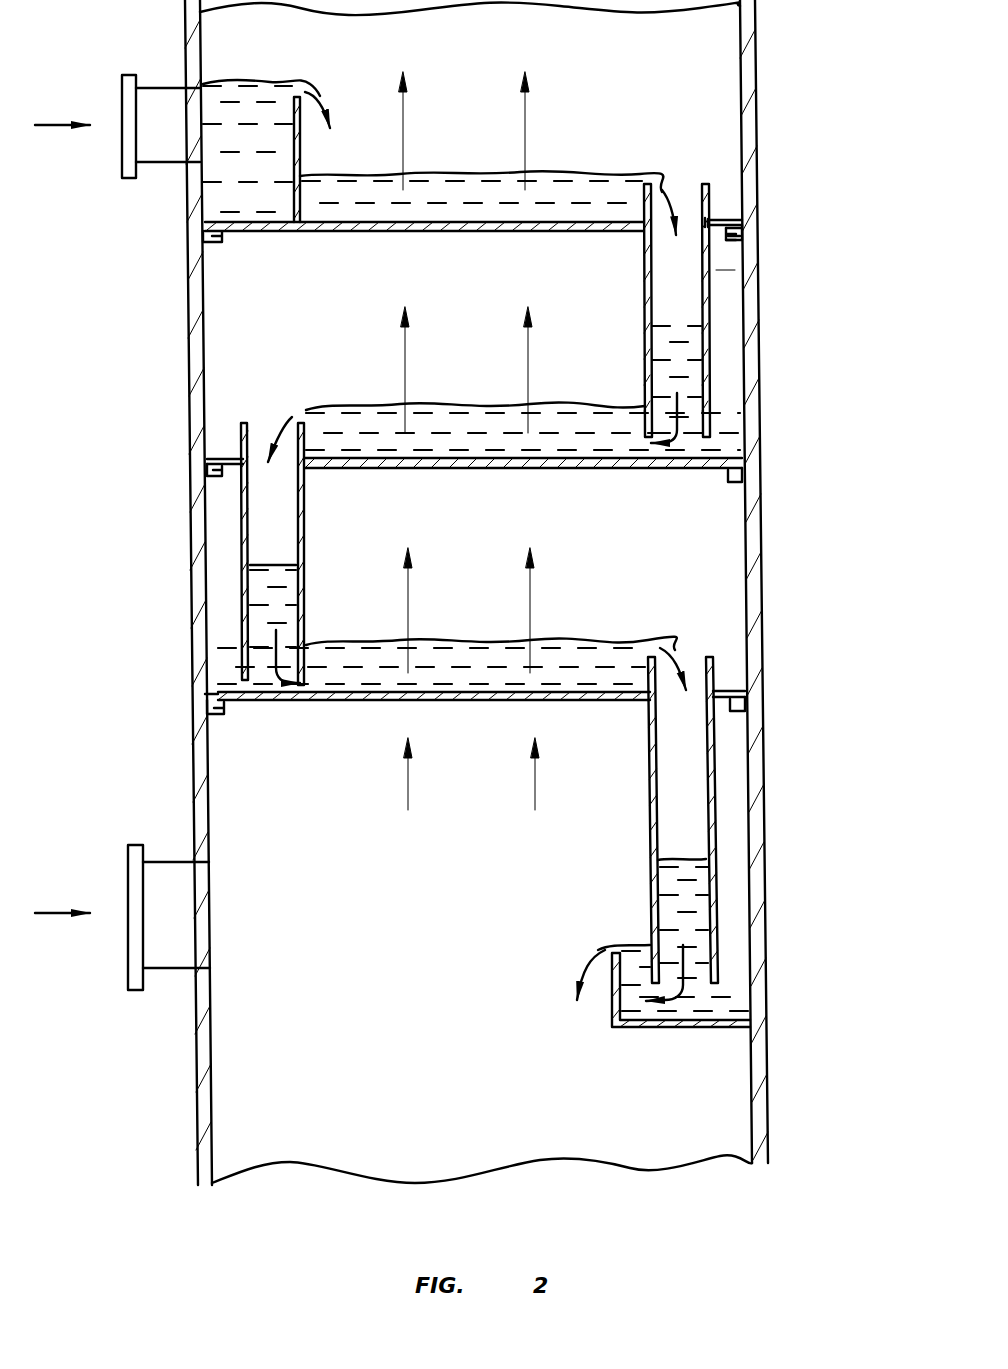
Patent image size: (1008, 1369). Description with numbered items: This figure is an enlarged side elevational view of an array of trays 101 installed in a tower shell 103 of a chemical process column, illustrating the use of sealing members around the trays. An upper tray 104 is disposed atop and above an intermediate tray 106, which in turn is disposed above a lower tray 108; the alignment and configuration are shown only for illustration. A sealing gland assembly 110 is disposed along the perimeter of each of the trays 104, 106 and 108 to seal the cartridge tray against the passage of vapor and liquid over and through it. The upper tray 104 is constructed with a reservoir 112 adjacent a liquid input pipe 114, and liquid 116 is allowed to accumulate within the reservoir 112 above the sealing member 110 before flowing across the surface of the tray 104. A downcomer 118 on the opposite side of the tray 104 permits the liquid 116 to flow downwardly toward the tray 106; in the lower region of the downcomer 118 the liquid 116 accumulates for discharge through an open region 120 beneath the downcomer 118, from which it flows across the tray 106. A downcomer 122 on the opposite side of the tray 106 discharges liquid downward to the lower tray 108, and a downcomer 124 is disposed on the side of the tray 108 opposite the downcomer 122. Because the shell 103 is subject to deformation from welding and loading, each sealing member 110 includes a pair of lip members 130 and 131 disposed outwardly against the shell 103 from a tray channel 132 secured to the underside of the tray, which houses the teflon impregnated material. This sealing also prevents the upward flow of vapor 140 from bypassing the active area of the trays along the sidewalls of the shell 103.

The array of trays 101 is at (717, 270).
The tower shell 103 is at (194, 374).
The upper tray 104 is at (380, 236).
The intermediate tray 106 is at (492, 469).
The lower tray 108 is at (506, 702).
The sealing gland assembly 110 is at (198, 245).
The reservoir 112 is at (301, 110).
The liquid input pipe 114 is at (185, 88).
The liquid 116 is at (245, 105).
The downcomer 118 is at (710, 305).
The open region 120 is at (710, 445).
The downcomer 122 is at (305, 522).
The downcomer 124 is at (650, 840).
The lip member 130 is at (742, 222).
The lip member 131 is at (730, 232).
The tray channel 132 is at (734, 240).
The vapor 140 is at (533, 616).